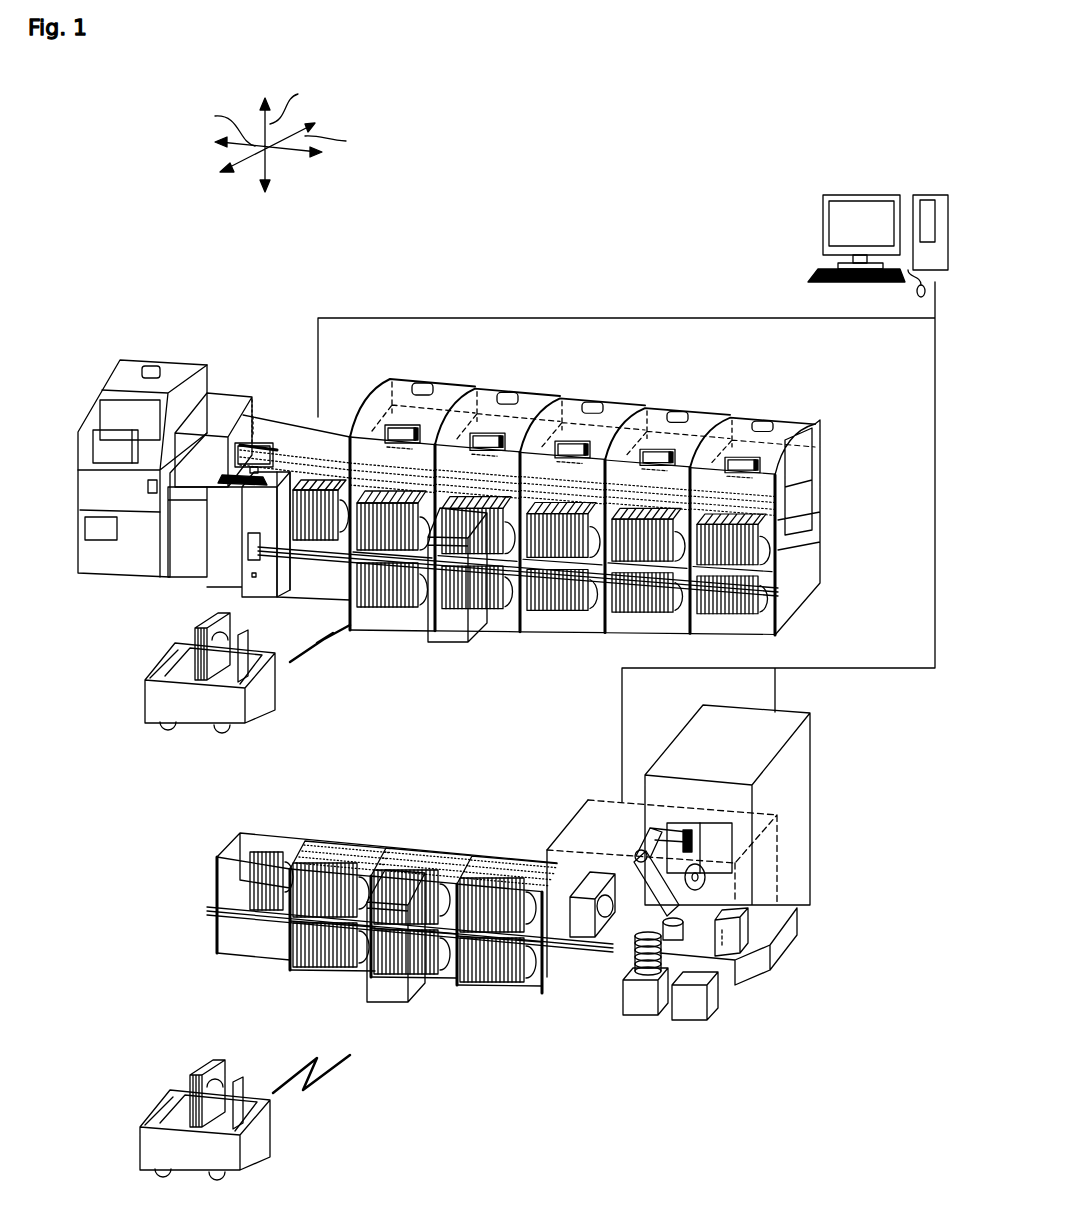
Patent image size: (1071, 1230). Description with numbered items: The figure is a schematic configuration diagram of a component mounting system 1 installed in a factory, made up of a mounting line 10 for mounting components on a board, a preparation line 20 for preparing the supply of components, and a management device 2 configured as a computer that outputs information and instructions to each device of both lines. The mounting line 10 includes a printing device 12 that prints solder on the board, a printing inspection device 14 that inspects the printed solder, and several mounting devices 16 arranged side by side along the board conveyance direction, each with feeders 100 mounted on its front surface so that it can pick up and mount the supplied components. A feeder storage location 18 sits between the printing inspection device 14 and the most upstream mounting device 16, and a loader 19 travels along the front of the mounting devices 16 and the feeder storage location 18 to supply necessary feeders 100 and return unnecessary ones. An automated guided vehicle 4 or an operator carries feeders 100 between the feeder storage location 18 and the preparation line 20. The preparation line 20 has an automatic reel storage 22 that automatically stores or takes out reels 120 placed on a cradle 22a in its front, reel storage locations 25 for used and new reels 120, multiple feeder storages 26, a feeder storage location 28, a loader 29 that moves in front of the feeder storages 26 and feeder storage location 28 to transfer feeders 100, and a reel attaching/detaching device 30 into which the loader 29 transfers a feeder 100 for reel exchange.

The component mounting system 1 is at (860, 109).
The management device 2 is at (888, 164).
The mounting line 10 is at (521, 287).
The printing device 12 is at (163, 362).
The printing inspection device 14 is at (230, 392).
The mounting device 16 is at (430, 380).
The feeder storage location 18 is at (320, 445).
The loader 19 is at (452, 643).
The feeder 100 is at (305, 560).
The automated guided vehicle 4 is at (275, 705).
The preparation line 20 is at (556, 757).
The feeder storage location 28 is at (268, 818).
The feeder storage 26 is at (340, 843).
The loader 29 is at (390, 1005).
The automatic reel storage 22 is at (817, 797).
The cradle 22a is at (718, 884).
The reel attaching/detaching device 30 is at (785, 970).
The reel storage location 25 is at (641, 1000).
The reel 120 is at (703, 948).